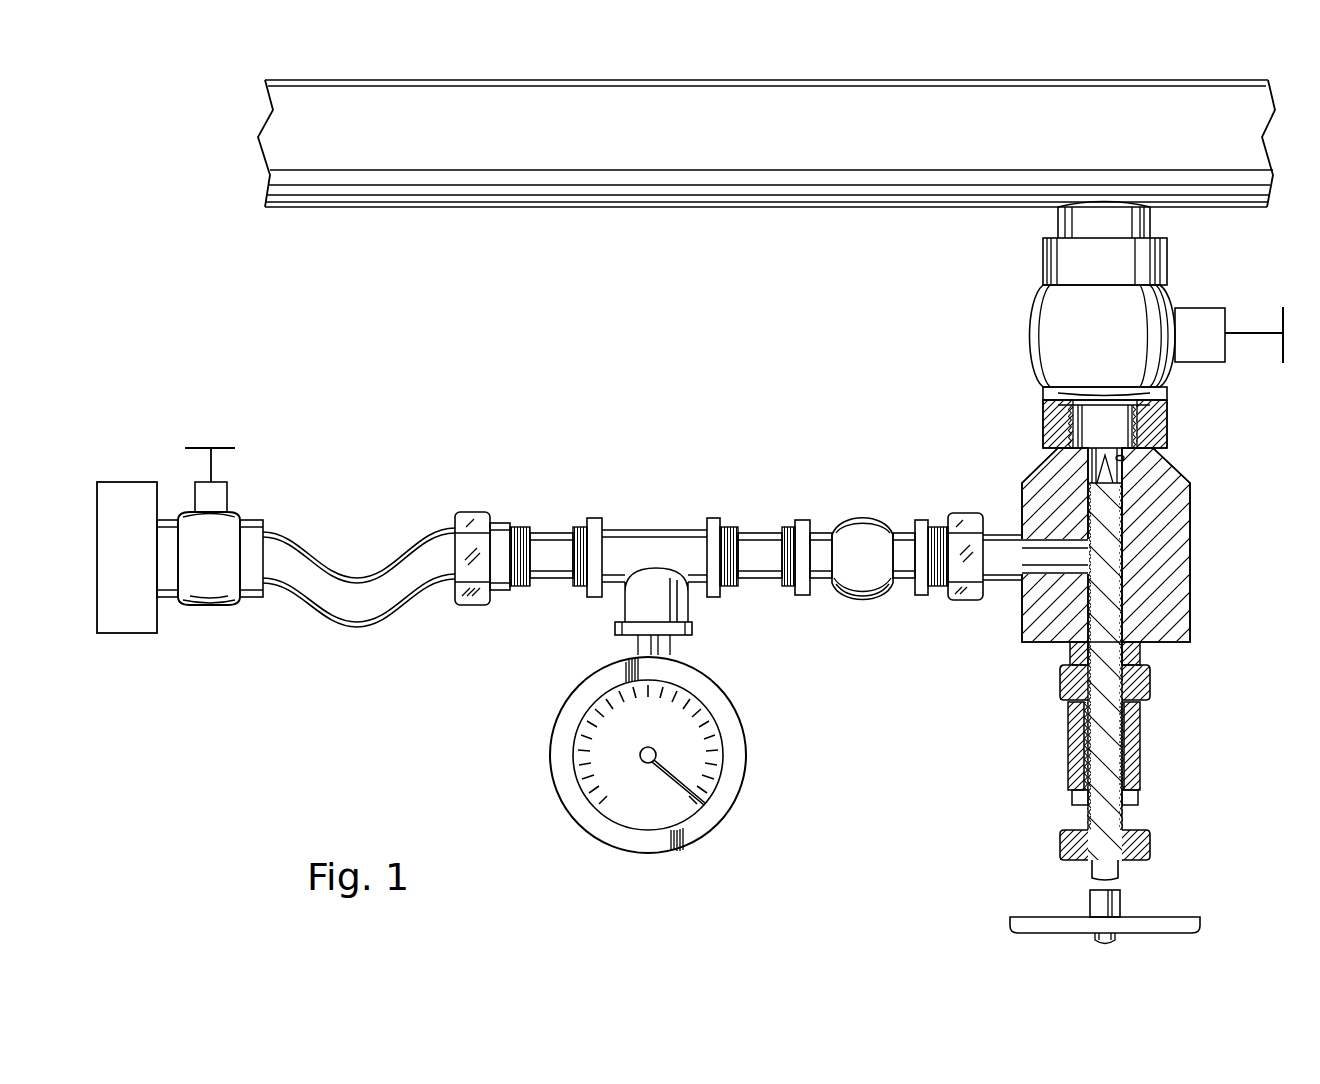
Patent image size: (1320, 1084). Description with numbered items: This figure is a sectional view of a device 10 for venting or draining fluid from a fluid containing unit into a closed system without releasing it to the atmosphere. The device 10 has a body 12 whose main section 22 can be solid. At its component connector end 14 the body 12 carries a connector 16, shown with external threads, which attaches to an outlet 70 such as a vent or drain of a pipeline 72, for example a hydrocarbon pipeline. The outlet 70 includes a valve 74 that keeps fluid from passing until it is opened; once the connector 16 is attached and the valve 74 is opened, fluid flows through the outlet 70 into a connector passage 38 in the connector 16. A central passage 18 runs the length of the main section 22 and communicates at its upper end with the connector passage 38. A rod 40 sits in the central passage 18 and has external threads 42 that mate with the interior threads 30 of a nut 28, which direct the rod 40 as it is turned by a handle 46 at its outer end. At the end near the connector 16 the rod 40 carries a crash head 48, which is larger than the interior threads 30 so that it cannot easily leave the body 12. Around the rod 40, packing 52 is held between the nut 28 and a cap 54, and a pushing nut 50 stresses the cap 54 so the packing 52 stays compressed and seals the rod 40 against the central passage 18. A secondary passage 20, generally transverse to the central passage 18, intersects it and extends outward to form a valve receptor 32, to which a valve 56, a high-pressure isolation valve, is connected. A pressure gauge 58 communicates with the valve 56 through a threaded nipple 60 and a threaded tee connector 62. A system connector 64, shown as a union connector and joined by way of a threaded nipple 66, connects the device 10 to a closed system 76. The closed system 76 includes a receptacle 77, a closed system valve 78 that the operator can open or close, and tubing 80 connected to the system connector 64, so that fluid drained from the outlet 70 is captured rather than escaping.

The device 10 is at (517, 695).
The body 12 is at (1200, 578).
The component connector end 14 is at (1147, 398).
The connector 16 is at (1167, 430).
The central passage 18 is at (1124, 458).
The secondary passage 20 is at (1023, 513).
The main section 22 is at (1190, 520).
The nut 28 is at (1060, 690).
The interior threads 30 is at (1140, 690).
The valve receptor 32 is at (1000, 582).
The connector passage 38 is at (1085, 423).
The rod 40 is at (1121, 900).
The external threads 42 is at (1138, 648).
The handle 46 is at (1010, 925).
The crash head 48 is at (1087, 458).
The pushing nut 50 is at (1152, 845).
The packing 52 is at (1140, 722).
The cap 54 is at (1075, 800).
The valve 56 is at (872, 517).
The pressure gauge 58 is at (752, 752).
The threaded nipple 60 is at (760, 530).
The threaded tee connector 62 is at (655, 530).
The system connector 64 is at (472, 512).
The threaded nipple 66 is at (548, 530).
The outlet 70 is at (1003, 277).
The pipeline 72 is at (1104, 145).
The valve 74 is at (1158, 300).
The closed system 76 is at (280, 447).
The receptacle 77 is at (123, 482).
The closed system valve 78 is at (210, 605).
The tubing 80 is at (370, 622).